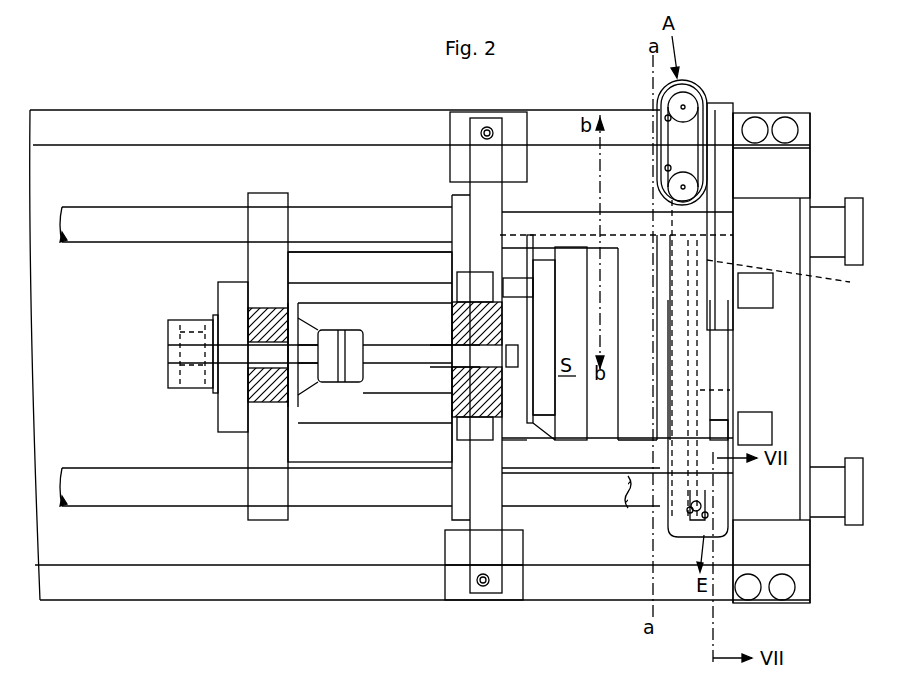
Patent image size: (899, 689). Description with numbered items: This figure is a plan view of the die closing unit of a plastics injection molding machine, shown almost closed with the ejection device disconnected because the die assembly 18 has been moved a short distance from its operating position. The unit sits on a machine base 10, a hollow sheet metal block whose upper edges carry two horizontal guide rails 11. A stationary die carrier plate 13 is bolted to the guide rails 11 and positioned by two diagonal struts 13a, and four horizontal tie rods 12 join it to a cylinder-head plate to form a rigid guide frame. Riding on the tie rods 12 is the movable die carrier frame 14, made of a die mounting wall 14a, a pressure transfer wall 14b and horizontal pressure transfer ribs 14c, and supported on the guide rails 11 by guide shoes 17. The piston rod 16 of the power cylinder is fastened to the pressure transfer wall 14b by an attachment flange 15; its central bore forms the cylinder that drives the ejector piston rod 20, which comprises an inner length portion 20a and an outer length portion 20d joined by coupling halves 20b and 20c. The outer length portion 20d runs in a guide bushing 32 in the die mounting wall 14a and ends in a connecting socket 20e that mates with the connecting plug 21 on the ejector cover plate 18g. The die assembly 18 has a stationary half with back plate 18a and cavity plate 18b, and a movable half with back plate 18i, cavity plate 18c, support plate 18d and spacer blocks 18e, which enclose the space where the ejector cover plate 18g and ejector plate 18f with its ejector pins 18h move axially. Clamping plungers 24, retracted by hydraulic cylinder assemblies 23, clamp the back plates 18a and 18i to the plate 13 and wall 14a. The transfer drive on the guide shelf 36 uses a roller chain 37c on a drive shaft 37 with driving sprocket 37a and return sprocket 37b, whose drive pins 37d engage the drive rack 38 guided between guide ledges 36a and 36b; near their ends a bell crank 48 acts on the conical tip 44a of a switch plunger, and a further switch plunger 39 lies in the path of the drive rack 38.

The machine base 10 is at (125, 160).
The guide rails 11 is at (178, 130).
The tie rods 12 is at (152, 220).
The stationary die carrier plate 13 is at (805, 410).
The struts 13a is at (770, 570).
The die carrier frame 14 is at (355, 252).
The die mounting wall 14a is at (483, 223).
The pressure transfer wall 14b is at (270, 215).
The pressure transfer ribs 14c is at (352, 445).
The attachment flange 15 is at (232, 403).
The piston rod 16 is at (186, 332).
The guide shoes 17 is at (512, 585).
The die assembly 18 is at (733, 342).
The back plate 18a is at (725, 372).
The cavity plate 18b is at (735, 318).
The cavity plate 18c is at (636, 458).
The support plate 18d is at (566, 442).
The spacer blocks 18e is at (537, 428).
The ejector plate 18f is at (548, 268).
The ejector cover plate 18g is at (530, 265).
The ejector pins 18h is at (600, 320).
The back plate 18i is at (518, 448).
The ejector piston rod 20 is at (398, 345).
The inner length portion 20a is at (262, 352).
The coupling half 20b is at (335, 345).
The coupling half 20c is at (340, 393).
The outer length portion 20d is at (386, 365).
The connecting socket 20e is at (520, 385).
The connecting plug 21 is at (463, 345).
The hydraulic cylinder assembly 23 is at (475, 292).
The clamping plungers 24 is at (470, 437).
The guide bushing 32 is at (460, 380).
The guide shelf 36 is at (728, 125).
The guide ledge 36a is at (797, 276).
The guide ledge 36b is at (710, 160).
The drive shaft 37 is at (690, 208).
The driving sprocket 37a is at (690, 187).
The return sprocket 37b is at (688, 98).
The roller chain 37c is at (668, 128).
The drive pins 37d is at (665, 170).
The drive rack 38 is at (748, 128).
The switch plunger 39 is at (706, 540).
The conical tip 44a is at (720, 510).
The bell crank 48 is at (687, 520).